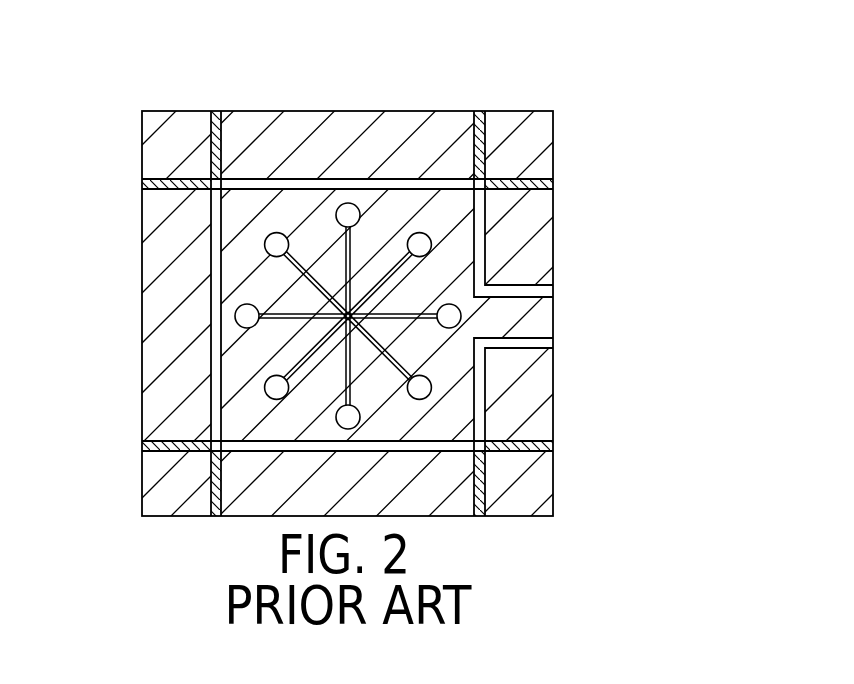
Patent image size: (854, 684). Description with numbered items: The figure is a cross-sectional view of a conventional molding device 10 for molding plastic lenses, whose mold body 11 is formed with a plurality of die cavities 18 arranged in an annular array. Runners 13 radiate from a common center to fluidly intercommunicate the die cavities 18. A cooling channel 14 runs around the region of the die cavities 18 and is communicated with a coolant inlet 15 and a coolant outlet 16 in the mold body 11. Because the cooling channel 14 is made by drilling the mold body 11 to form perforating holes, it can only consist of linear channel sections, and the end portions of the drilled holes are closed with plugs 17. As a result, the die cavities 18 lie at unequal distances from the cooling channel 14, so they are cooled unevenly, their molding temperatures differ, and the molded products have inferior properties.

The molding device 10 is at (427, 304).
The mold body 11 is at (553, 134).
The runners 13 is at (300, 260).
The cooling channel 14 is at (388, 185).
The coolant inlet 15 is at (530, 290).
The coolant outlet 16 is at (515, 340).
The plugs 17 is at (478, 111).
The die cavities 18 is at (275, 243).